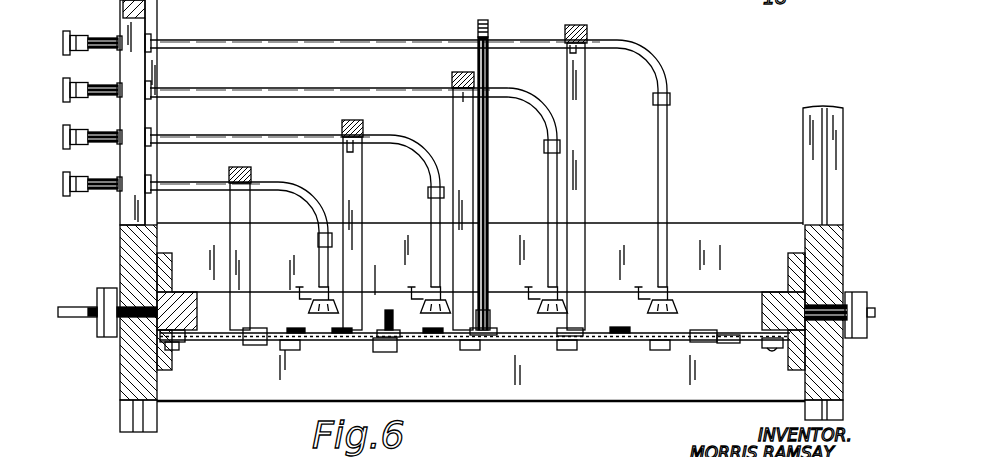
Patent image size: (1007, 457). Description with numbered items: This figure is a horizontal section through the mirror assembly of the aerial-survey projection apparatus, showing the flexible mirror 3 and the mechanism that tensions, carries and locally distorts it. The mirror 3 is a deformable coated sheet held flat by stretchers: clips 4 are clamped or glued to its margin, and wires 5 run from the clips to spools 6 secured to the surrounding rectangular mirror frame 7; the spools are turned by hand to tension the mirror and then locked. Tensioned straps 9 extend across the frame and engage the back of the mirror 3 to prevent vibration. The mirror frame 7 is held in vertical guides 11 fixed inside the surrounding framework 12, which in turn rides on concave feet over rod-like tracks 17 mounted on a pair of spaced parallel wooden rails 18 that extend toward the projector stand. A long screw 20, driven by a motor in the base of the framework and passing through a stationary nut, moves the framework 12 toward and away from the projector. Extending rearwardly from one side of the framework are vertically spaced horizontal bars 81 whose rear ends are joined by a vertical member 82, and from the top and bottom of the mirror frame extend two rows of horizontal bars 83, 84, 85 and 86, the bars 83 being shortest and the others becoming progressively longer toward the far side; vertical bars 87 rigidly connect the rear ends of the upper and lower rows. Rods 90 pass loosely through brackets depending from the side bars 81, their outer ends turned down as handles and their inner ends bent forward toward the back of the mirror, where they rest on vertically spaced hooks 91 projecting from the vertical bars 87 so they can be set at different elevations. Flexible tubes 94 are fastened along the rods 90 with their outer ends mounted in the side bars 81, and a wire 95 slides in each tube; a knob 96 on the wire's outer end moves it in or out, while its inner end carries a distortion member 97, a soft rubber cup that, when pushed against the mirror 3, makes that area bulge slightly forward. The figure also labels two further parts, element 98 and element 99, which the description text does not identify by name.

The flexible mirror 3 is at (510, 343).
The clips 4 is at (302, 347).
The wires 5 is at (220, 343).
The spools 6 is at (277, 345).
The mirror frame 7 is at (183, 296).
The straps 9 is at (622, 327).
The vertical guides 11 is at (790, 358).
The framework 12 is at (128, 375).
The tracks 17 is at (135, 410).
The wooden rails 18 is at (157, 422).
The screw 20 is at (476, 31).
The horizontal bars 81 is at (127, 207).
The vertical member 82 is at (125, 5).
The horizontal bars 83 is at (232, 210).
The horizontal bars 84 is at (348, 168).
The horizontal bars 85 is at (458, 117).
The horizontal bars 86 is at (582, 150).
The vertical bars 87 is at (588, 32).
The rods 90 is at (668, 60).
The hooks 91 is at (355, 158).
The flexible tubes 94 is at (640, 57).
The wire 95 is at (660, 267).
The knob 96 is at (70, 30).
The distortion member 97 is at (312, 305).
The brush nozzle 98 is at (413, 290).
The rod bottom bracket 99 is at (487, 318).